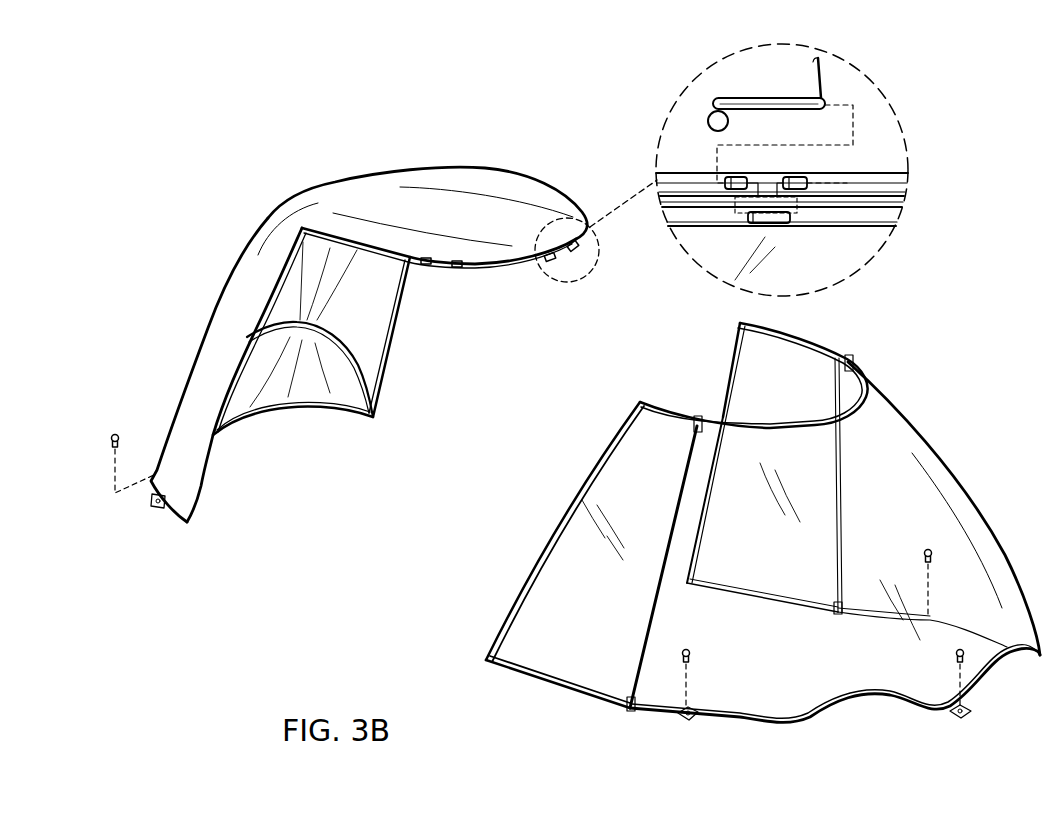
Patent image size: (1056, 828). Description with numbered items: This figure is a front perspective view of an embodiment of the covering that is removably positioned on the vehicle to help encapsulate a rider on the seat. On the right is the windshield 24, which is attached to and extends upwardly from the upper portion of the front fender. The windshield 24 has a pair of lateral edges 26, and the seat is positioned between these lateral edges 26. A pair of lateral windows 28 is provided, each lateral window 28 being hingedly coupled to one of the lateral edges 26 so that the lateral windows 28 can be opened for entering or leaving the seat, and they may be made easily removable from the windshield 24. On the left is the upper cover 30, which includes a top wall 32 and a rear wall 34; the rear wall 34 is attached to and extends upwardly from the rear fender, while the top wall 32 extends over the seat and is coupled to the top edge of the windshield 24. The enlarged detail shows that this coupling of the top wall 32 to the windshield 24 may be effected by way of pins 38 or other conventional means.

The windshield 24 is at (929, 503).
The lateral edges 26 is at (832, 356).
The lateral windows 28 is at (746, 360).
The upper cover 30 is at (216, 219).
The top wall 32 is at (447, 176).
The rear wall 34 is at (207, 338).
The pins 38 is at (751, 98).